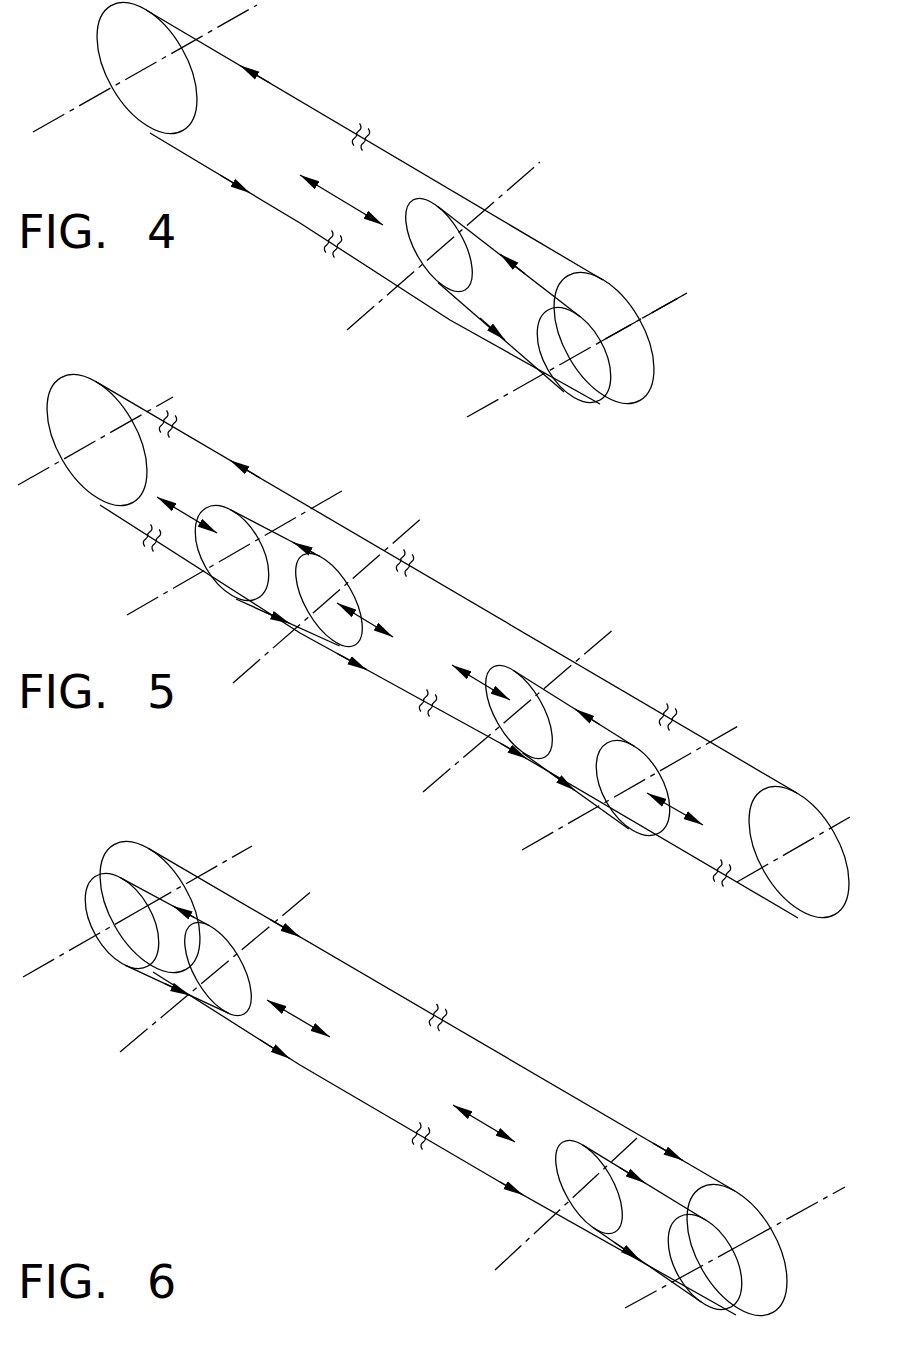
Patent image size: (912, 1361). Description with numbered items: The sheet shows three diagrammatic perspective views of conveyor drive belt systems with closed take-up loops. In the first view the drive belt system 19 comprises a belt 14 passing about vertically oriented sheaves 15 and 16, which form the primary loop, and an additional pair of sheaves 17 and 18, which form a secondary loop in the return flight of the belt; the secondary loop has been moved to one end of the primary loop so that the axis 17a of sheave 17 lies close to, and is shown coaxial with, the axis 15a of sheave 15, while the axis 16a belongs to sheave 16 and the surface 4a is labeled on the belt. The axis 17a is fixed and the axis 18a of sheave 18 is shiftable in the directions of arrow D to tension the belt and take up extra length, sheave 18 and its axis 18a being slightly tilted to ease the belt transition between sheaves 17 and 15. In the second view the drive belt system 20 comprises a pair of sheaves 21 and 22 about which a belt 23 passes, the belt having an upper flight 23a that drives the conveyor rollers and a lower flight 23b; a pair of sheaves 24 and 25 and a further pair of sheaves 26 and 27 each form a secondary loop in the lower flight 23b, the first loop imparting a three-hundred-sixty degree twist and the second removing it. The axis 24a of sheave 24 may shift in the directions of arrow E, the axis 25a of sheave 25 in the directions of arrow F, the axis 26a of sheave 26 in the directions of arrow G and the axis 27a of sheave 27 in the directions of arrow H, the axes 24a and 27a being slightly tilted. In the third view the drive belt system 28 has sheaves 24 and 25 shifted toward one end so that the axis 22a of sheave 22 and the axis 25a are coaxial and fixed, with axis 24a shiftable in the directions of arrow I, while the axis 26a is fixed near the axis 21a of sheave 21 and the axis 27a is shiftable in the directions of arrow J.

In FIG. 4, the belt 14 is at (387, 150).
In FIG. 4, the outer wall surface 4a is at (430, 178).
In FIG. 4, the sheave 15 is at (643, 373).
In FIG. 4, the axis of sheave 15 15a is at (663, 300).
In FIG. 4, the sheave 16 is at (170, 103).
In FIG. 4, the input end axis 16a is at (245, 13).
In FIG. 4, the sheave 17 is at (585, 403).
In FIG. 4, the axis of sheave 17 17a is at (505, 392).
In FIG. 4, the sheave 18 is at (462, 275).
In FIG. 4, the axis of sheave 18 18a is at (522, 182).
In FIG. 4, the drive belt system 19 is at (348, 81).
In FIG. 4, the arrow D is at (342, 196).
In FIG. 5, the drive belt system 20 is at (596, 580).
In FIG. 5, the sheave 21 is at (808, 897).
In FIG. 6, the sheave 21 is at (768, 1258).
In FIG. 5, the axis of sheave 21 21a is at (818, 800).
In FIG. 6, the axis of sheave 21 21a is at (833, 1190).
In FIG. 5, the sheave 22 is at (97, 480).
In FIG. 6, the sheave 22 is at (133, 858).
In FIG. 5, the axis of sheave 22 22a is at (180, 403).
In FIG. 6, the axis of sheave 22 22a is at (256, 847).
In FIG. 5, the belt 23 is at (440, 580).
In FIG. 6, the belt 23 is at (333, 955).
In FIG. 5, the upper flight 23a is at (483, 606).
In FIG. 6, the upper flight 23a is at (388, 989).
In FIG. 5, the lower flight 23b is at (400, 700).
In FIG. 5, the sheave 24 is at (347, 637).
In FIG. 6, the sheave 24 is at (237, 1008).
In FIG. 6, the axis of sheave 24 24a is at (315, 892).
In FIG. 5, the sheave 25 is at (222, 580).
In FIG. 6, the sheave 25 is at (100, 907).
In FIG. 6, the axis of sheave 25 25a is at (35, 970).
In FIG. 5, the sheave 26 is at (637, 828).
In FIG. 6, the sheave 26 is at (672, 1250).
In FIG. 6, the axis of sheave 26 26a is at (622, 1303).
In FIG. 5, the sheave 27 is at (540, 730).
In FIG. 6, the sheave 27 is at (608, 1197).
In FIG. 6, the axis of sheave 27 27a is at (690, 1115).
In FIG. 6, the drive belt system 28 is at (523, 1034).
In FIG. 5, the arrow E is at (365, 621).
In FIG. 5, the arrow F is at (188, 528).
In FIG. 5, the arrow G is at (673, 810).
In FIG. 5, the arrow H is at (477, 682).
In FIG. 6, the arrow I is at (298, 1013).
In FIG. 6, the arrow J is at (490, 1122).